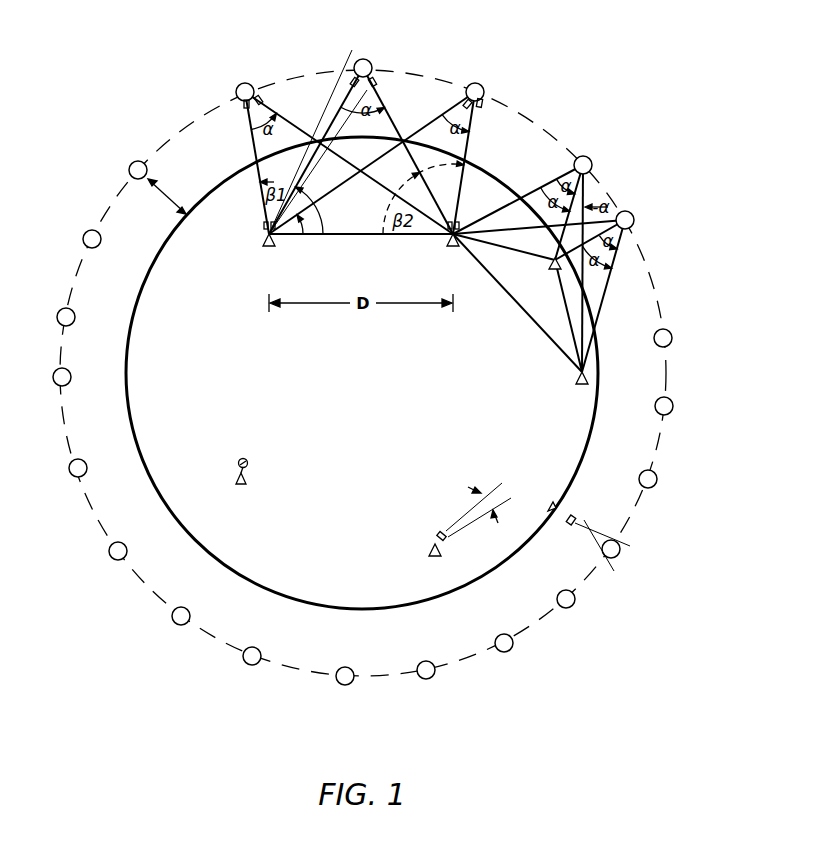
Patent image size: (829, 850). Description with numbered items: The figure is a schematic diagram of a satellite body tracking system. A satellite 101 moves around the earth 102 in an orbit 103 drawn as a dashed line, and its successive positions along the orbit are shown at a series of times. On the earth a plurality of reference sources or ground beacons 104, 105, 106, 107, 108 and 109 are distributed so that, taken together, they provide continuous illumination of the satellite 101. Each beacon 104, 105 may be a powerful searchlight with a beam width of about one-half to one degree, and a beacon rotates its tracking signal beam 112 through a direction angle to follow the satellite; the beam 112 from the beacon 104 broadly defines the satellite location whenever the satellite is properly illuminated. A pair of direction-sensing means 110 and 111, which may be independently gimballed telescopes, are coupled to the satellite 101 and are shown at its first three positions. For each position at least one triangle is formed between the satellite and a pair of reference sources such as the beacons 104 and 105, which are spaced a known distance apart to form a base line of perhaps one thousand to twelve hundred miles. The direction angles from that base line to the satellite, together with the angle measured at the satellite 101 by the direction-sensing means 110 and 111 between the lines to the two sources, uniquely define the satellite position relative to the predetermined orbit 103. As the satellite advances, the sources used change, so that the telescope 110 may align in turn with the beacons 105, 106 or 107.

The satellite 101 is at (252, 84).
The earth 102 is at (209, 313).
The orbit 103 is at (181, 132).
The reference source or ground beacon 104 is at (278, 241).
The reference source or ground beacon 105 is at (449, 243).
The reference source or ground beacon 106 is at (547, 266).
The reference source or ground beacon 107 is at (576, 382).
The reference source or ground beacon 108 is at (430, 551).
The reference source or ground beacon 109 is at (249, 479).
The direction-sensing means 110 is at (243, 108).
The direction-sensing means 111 is at (263, 101).
The tracking signal beam 112 is at (303, 171).